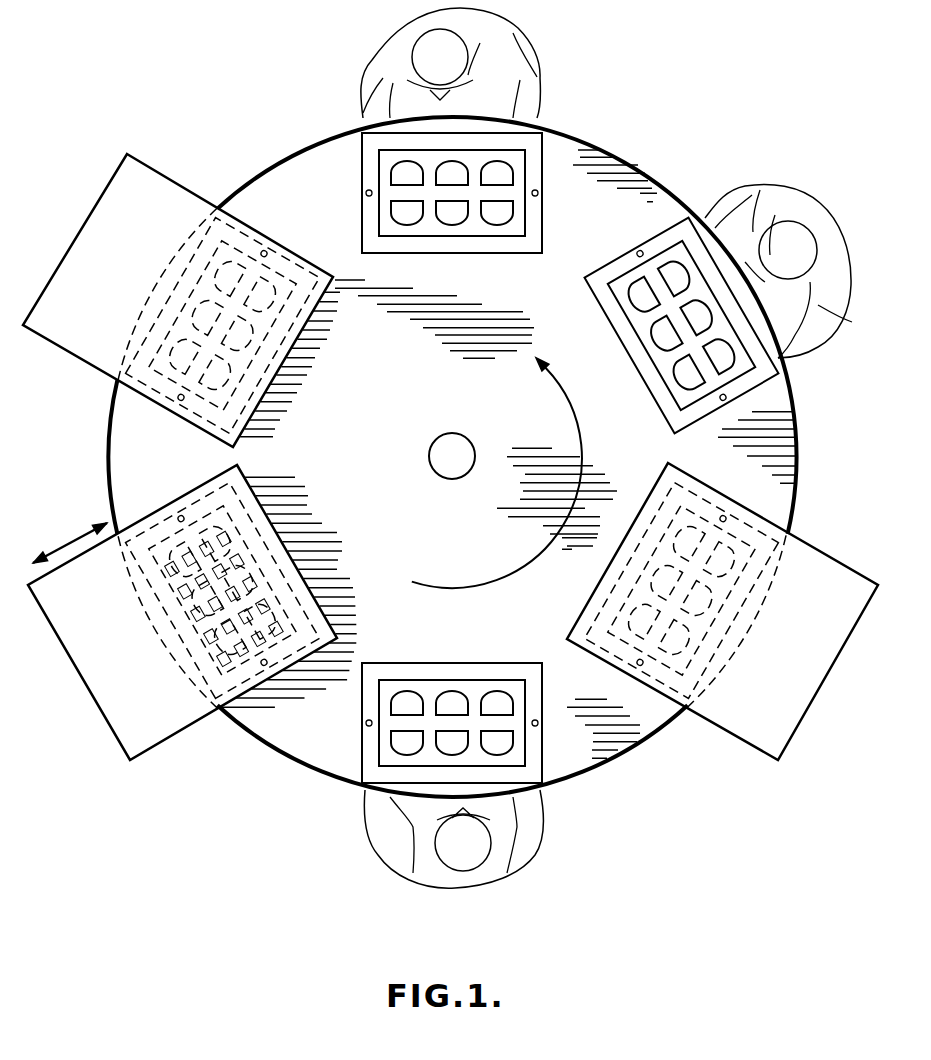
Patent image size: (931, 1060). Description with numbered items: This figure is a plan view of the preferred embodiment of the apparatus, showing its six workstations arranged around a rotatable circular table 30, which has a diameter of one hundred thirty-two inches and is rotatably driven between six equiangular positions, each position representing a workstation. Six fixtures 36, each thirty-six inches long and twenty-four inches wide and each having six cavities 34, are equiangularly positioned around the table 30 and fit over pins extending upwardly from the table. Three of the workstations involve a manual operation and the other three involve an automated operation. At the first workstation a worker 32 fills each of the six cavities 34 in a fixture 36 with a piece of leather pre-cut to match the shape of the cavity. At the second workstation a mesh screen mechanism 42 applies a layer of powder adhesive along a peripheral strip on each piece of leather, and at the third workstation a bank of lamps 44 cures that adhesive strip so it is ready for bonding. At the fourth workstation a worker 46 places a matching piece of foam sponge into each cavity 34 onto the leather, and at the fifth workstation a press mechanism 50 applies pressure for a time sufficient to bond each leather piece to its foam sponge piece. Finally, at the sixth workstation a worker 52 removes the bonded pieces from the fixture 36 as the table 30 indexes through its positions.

The rotatable circular table 30 is at (623, 200).
The worker 32 is at (500, 50).
The cavities 34 is at (391, 158).
The fixture 36 is at (448, 169).
The mesh screen mechanism 42 is at (167, 205).
The bank of lamps 44 is at (262, 635).
The worker 46 is at (538, 848).
The press mechanism 50 is at (752, 700).
The worker 52 is at (820, 305).